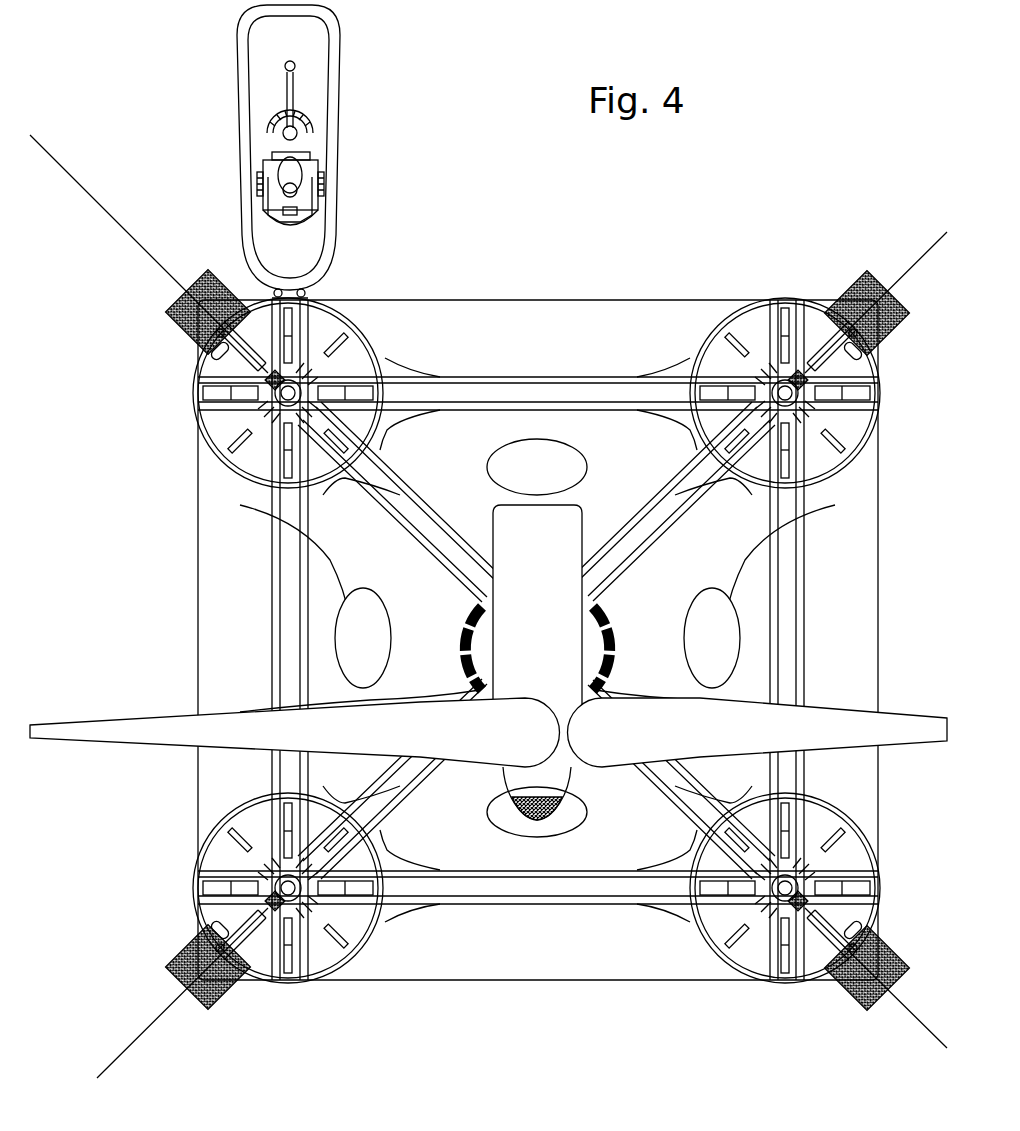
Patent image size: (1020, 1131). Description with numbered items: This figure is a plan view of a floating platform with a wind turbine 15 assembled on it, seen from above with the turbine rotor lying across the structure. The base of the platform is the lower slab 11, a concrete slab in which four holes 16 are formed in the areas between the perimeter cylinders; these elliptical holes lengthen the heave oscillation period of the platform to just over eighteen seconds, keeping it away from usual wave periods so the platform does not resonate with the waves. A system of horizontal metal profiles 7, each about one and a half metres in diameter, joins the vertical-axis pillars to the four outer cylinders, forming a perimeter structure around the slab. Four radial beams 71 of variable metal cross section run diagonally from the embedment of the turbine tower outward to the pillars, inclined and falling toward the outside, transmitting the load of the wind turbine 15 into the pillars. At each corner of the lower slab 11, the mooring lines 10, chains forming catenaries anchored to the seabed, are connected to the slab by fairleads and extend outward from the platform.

The horizontal metal profiles 7 is at (483, 390).
The mooring lines 10 is at (135, 242).
The lower slab 11 is at (212, 543).
The wind turbine 15 is at (565, 775).
The holes 16 is at (547, 450).
The radial beams 71 is at (412, 540).